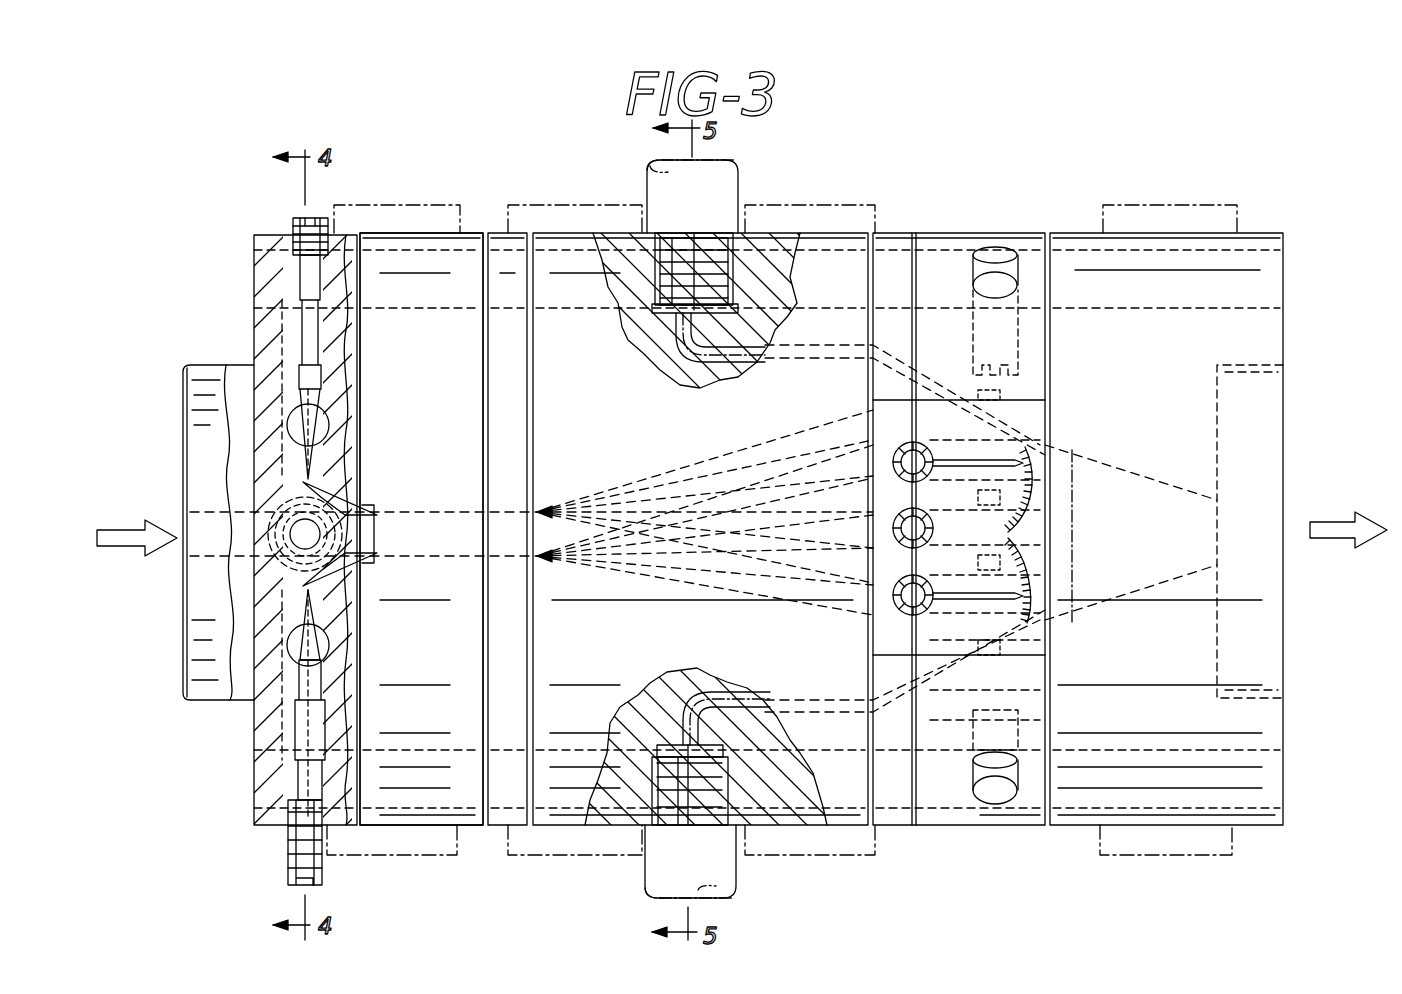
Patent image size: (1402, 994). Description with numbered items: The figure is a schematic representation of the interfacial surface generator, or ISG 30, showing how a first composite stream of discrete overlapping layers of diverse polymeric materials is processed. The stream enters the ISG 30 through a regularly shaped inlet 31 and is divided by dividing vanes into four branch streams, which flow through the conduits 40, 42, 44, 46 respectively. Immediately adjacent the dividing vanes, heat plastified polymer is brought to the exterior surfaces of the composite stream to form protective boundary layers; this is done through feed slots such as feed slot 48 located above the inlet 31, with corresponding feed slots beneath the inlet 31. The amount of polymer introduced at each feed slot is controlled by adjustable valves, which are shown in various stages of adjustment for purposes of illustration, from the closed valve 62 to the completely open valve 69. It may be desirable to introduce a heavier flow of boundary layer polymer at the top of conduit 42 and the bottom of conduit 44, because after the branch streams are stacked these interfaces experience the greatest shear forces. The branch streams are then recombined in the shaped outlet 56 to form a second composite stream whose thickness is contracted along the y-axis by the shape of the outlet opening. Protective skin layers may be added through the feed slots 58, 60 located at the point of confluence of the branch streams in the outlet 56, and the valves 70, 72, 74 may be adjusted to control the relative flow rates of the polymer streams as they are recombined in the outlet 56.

The interfacial surface generator 30 is at (493, 168).
The inlet 31 is at (232, 552).
The conduit 40 is at (373, 538).
The conduit 42 is at (830, 460).
The conduit 44 is at (825, 630).
The conduit 46 is at (827, 515).
The feed slot 48 is at (357, 476).
The outlet 56 is at (1140, 482).
The feed slot 58 is at (1065, 447).
The feed slot 60 is at (1073, 613).
The adjustable valve 62 is at (293, 225).
The adjustable valve 69 is at (290, 870).
The valve 70 is at (895, 612).
The valve 72 is at (1047, 533).
The valve 74 is at (893, 457).